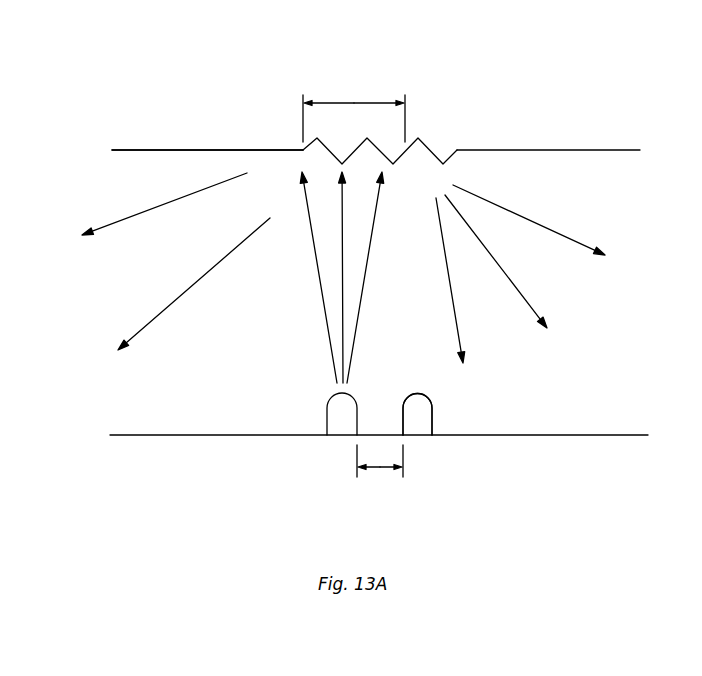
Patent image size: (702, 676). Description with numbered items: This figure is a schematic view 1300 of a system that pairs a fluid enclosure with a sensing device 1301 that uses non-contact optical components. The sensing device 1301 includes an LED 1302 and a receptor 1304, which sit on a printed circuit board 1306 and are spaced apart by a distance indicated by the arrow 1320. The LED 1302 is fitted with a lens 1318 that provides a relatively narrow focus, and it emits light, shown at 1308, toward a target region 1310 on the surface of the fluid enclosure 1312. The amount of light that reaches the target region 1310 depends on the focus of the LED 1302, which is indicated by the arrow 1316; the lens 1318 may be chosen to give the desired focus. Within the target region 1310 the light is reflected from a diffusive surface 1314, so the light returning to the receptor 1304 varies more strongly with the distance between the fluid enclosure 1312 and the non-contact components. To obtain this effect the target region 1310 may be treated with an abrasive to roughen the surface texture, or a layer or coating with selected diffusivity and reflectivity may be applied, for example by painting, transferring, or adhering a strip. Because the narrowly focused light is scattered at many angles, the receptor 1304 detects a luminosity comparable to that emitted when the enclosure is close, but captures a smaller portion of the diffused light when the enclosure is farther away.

The schematic view 1300 is at (567, 60).
The sensing device 1301 is at (454, 389).
The LED 1302 is at (340, 428).
The receptor 1304 is at (423, 440).
The printed circuit board (PCB) 1306 is at (155, 433).
The emitted light 1308 is at (302, 302).
The target region 1310 is at (433, 156).
The fluid enclosure 1312 is at (135, 174).
The diffusive surface 1314 is at (456, 128).
The arrow indicating LED focus 1316 is at (354, 104).
The lens 1318 is at (327, 402).
The arrow indicating distance 1320 is at (380, 476).